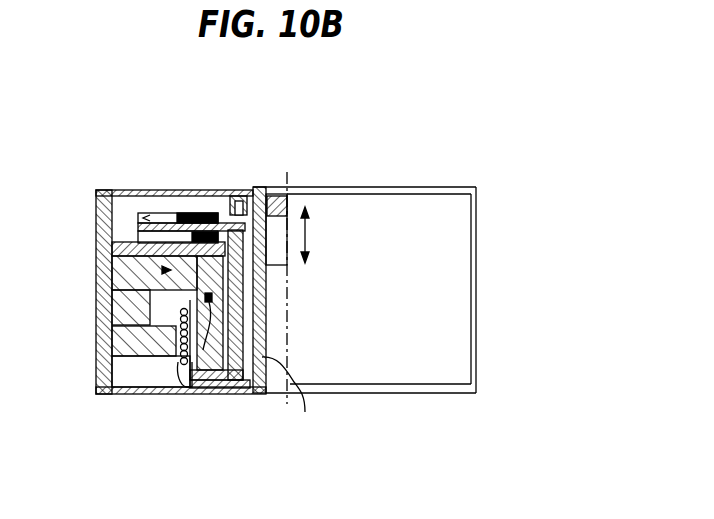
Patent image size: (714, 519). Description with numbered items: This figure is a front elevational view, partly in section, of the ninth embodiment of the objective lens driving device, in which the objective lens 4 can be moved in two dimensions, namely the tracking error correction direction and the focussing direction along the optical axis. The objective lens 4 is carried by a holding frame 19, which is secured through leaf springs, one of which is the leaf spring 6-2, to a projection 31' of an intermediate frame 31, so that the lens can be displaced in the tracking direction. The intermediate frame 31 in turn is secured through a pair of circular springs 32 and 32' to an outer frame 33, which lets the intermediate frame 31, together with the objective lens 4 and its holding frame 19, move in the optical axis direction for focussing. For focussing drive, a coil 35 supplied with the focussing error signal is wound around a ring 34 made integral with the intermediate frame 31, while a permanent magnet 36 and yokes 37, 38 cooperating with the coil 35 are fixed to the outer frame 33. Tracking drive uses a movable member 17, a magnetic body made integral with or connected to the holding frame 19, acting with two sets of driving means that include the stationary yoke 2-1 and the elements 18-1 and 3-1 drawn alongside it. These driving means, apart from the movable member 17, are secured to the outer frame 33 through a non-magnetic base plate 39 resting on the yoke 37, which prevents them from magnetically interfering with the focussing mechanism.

The movable member 17 is at (86, 196).
The circular spring 32 is at (269, 256).
The circular spring 32' is at (263, 430).
The permanent magnet 18-1 is at (155, 213).
The stationary yoke 2-1 is at (185, 213).
The coil 3-1 is at (207, 213).
The intermediate frame 31 is at (236, 156).
The projection 31' is at (251, 335).
The holding frame 19 is at (259, 187).
The objective lens 4 is at (287, 192).
The non-magnetic base plate 39 is at (105, 242).
The yoke 37 is at (110, 275).
The outer frame 33 is at (105, 318).
The permanent magnet 36 is at (102, 325).
The yoke 38 is at (104, 374).
The coil 35 is at (181, 394).
The ring 34 is at (220, 394).
The leaf spring 6-2 is at (297, 400).